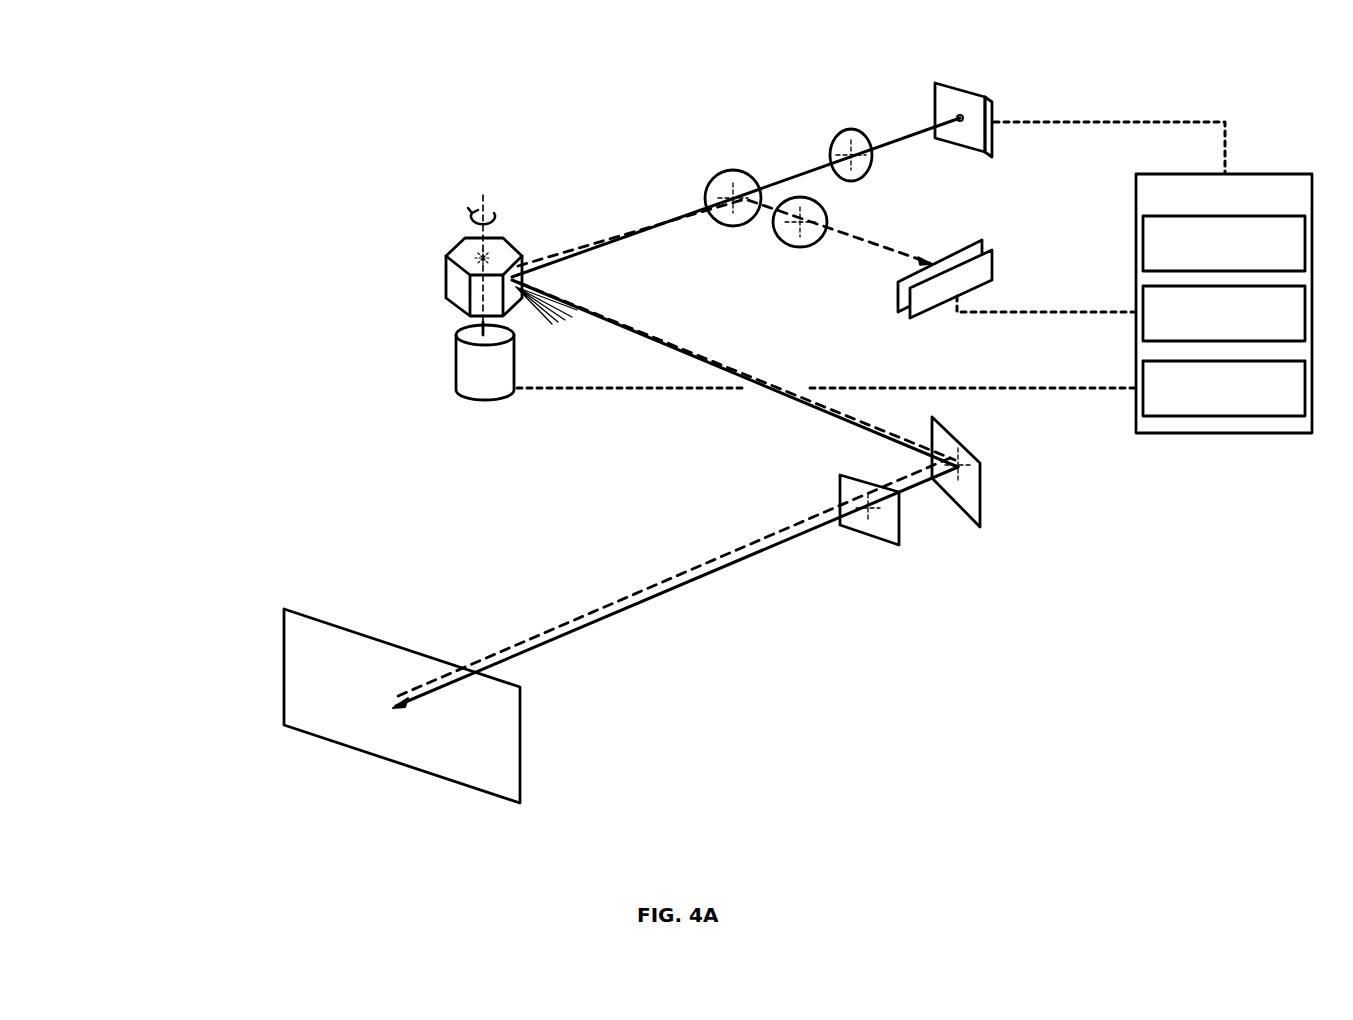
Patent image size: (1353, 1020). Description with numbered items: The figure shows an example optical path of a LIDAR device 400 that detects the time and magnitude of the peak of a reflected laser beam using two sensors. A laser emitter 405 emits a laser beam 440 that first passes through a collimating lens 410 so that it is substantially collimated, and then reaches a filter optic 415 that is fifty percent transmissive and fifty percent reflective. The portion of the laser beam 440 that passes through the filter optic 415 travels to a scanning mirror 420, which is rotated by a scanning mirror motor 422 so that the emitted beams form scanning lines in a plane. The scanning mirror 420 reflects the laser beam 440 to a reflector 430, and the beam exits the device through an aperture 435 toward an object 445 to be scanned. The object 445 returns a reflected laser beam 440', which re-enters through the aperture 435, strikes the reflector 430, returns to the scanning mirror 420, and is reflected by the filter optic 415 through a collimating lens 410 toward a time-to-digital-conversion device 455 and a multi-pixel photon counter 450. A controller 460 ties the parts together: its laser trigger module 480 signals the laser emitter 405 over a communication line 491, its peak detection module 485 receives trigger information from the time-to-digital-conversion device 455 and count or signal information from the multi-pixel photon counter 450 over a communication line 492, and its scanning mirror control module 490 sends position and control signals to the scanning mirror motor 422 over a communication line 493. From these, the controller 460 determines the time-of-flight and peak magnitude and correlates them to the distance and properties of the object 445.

The LIDAR device 400 is at (750, 405).
The laser emitter 405 is at (935, 83).
The collimating lens 410 is at (842, 128).
The filter optic 415 is at (715, 180).
The scanning mirror 420 is at (462, 250).
The scanning mirror motor 422 is at (458, 333).
The reflector 430 is at (980, 460).
The aperture 435 is at (840, 475).
The laser beam 440 is at (676, 399).
The reflected laser beam 440' is at (676, 446).
The object 445 is at (284, 607).
The multi-pixel photon counter (MPPC) 450 is at (975, 242).
The time-to-digital-conversion (TDC) device 455 is at (992, 252).
The controller 460 is at (1224, 303).
The laser trigger module 480 is at (1224, 243).
The peak detection module 485 is at (1224, 313).
The scanning mirror control module 490 is at (1224, 388).
The communication line 491 is at (1140, 122).
The communication line 492 is at (1120, 310).
The communication line 493 is at (1100, 388).